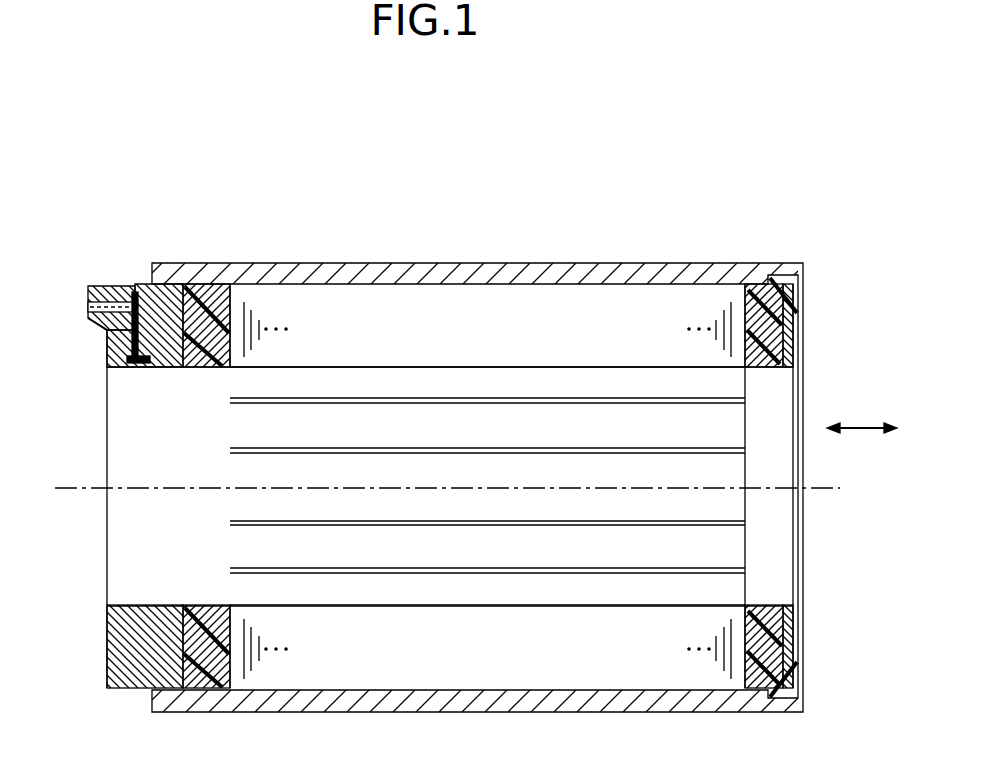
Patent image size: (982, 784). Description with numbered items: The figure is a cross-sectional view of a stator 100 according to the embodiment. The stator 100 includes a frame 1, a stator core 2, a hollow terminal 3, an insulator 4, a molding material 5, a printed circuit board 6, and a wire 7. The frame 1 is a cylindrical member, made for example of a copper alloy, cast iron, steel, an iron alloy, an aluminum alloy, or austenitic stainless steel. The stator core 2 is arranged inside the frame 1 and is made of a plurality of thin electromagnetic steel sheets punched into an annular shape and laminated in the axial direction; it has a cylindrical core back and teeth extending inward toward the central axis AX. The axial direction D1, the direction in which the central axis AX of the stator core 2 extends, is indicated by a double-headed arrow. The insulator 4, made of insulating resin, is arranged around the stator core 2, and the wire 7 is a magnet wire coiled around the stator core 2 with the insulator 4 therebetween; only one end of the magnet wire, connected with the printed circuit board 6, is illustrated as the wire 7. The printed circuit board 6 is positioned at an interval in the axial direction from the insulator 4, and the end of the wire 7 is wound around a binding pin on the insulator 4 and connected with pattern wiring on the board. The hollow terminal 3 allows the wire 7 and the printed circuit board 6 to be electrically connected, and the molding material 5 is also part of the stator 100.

The stator 100 is at (406, 147).
The frame 1 is at (645, 272).
The stator core 2 is at (513, 315).
The hollow terminal 3 is at (97, 297).
The insulator 4 is at (215, 290).
The molding material 5 is at (120, 640).
The printed circuit board 6 is at (105, 328).
The wire 7 is at (165, 367).
The central axis AX is at (828, 490).
The axial direction D1 is at (862, 414).